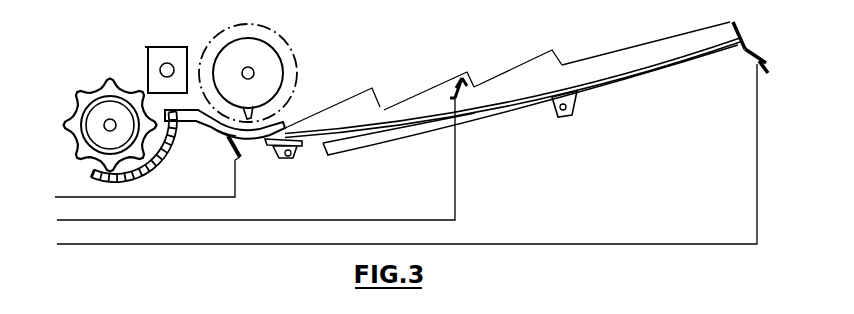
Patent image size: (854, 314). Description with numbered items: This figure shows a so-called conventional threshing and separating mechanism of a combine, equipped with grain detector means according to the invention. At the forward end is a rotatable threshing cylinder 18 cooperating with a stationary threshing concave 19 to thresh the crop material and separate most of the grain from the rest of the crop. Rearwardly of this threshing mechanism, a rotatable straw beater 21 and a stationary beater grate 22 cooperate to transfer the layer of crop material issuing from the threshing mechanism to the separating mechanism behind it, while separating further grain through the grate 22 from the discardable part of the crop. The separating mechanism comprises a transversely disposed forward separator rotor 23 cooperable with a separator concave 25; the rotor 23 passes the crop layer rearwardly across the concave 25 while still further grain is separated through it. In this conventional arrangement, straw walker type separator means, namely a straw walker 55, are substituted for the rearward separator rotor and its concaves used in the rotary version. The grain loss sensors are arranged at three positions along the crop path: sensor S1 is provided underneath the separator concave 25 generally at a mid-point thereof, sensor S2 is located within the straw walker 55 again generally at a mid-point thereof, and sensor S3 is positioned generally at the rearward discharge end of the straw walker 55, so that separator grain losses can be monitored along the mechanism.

The rotatable threshing cylinder 18 is at (96, 90).
The stationary threshing concave 19 is at (143, 172).
The rotatable straw beater 21 is at (167, 48).
The stationary beater grate 22 is at (184, 121).
The forward separator rotor 23 is at (291, 44).
The separator concave 25 is at (218, 136).
The straw walker 55 is at (617, 85).
The sensor S1 is at (243, 160).
The sensor S2 is at (463, 90).
The sensor S3 is at (742, 60).